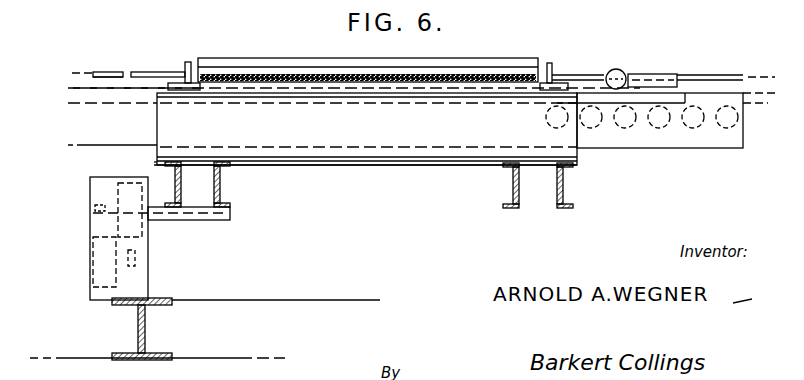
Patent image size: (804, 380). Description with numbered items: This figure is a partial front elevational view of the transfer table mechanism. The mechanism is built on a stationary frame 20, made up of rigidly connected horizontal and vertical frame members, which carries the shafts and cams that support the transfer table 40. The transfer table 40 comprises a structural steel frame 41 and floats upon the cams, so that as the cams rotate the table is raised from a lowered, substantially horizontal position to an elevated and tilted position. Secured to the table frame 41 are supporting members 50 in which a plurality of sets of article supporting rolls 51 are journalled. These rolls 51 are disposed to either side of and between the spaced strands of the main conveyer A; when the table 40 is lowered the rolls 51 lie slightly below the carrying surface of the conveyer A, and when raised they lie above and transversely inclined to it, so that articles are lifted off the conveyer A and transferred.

The main conveyer A is at (112, 73).
The stationary frame 20 is at (165, 300).
The transfer table 40 is at (397, 168).
The structural steel frame 41 is at (558, 197).
The supporting members 50 is at (187, 62).
The article supporting rolls 51 is at (248, 62).